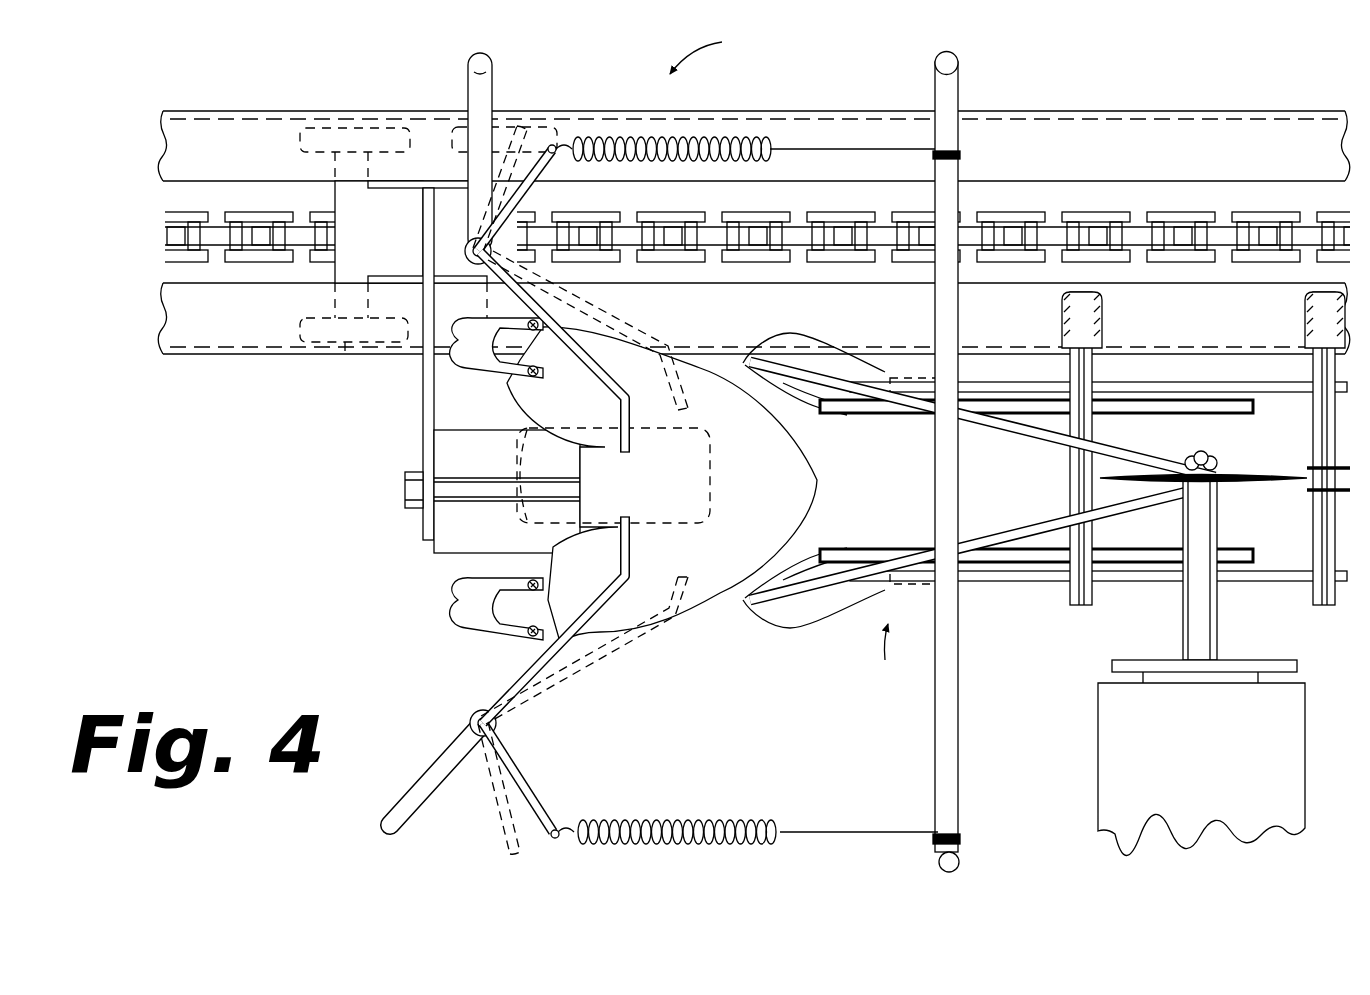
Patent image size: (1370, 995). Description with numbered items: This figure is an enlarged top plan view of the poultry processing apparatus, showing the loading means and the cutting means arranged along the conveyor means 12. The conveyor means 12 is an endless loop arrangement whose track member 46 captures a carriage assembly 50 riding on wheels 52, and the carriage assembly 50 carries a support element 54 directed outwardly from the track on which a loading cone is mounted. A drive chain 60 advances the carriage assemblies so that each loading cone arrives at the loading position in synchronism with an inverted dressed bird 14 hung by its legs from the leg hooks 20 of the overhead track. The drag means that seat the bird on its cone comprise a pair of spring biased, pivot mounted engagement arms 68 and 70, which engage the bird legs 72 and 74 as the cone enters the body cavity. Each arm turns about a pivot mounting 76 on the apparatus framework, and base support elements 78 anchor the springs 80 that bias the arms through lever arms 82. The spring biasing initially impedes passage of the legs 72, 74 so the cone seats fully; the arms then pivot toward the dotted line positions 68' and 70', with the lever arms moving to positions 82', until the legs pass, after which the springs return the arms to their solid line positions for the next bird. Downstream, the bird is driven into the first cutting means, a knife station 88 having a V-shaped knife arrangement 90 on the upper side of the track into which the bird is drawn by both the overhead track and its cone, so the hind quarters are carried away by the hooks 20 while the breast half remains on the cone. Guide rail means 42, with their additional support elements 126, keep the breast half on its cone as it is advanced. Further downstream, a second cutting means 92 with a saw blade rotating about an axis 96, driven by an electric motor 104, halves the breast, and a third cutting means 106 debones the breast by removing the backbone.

The carriage means or processor conveyor means 12 is at (713, 50).
The dressed bird 14 is at (822, 480).
The leg hooks 20 is at (510, 376).
The guide rail means 42 is at (840, 416).
The endless loop track member 46 is at (222, 162).
The carriage assembly 50 is at (362, 245).
The wheels 52 is at (340, 356).
The support element 54 is at (423, 393).
The drive chain 60 is at (980, 212).
The engagement arm 68 is at (555, 352).
The pivoted position of engagement arm 68' is at (588, 330).
The engagement arm 70 is at (556, 620).
The pivoted position of engagement arm 70' is at (584, 650).
The bird leg 72 is at (520, 408).
The bird leg 74 is at (537, 549).
The pivot mounting 76 is at (466, 258).
The base support element 78 is at (960, 128).
The spring 80 is at (688, 138).
The lever arm 82 is at (542, 491).
The displaced position of lever arm 82' is at (498, 469).
The knife station 88 is at (858, 650).
The V-shaped knife arrangement 90 is at (1000, 420).
The second cutting means 92 is at (1230, 457).
The axis 96 is at (1240, 482).
The electric motor 104 is at (1180, 775).
The third cutting means 106 is at (1320, 497).
The support elements 126 is at (1070, 470).